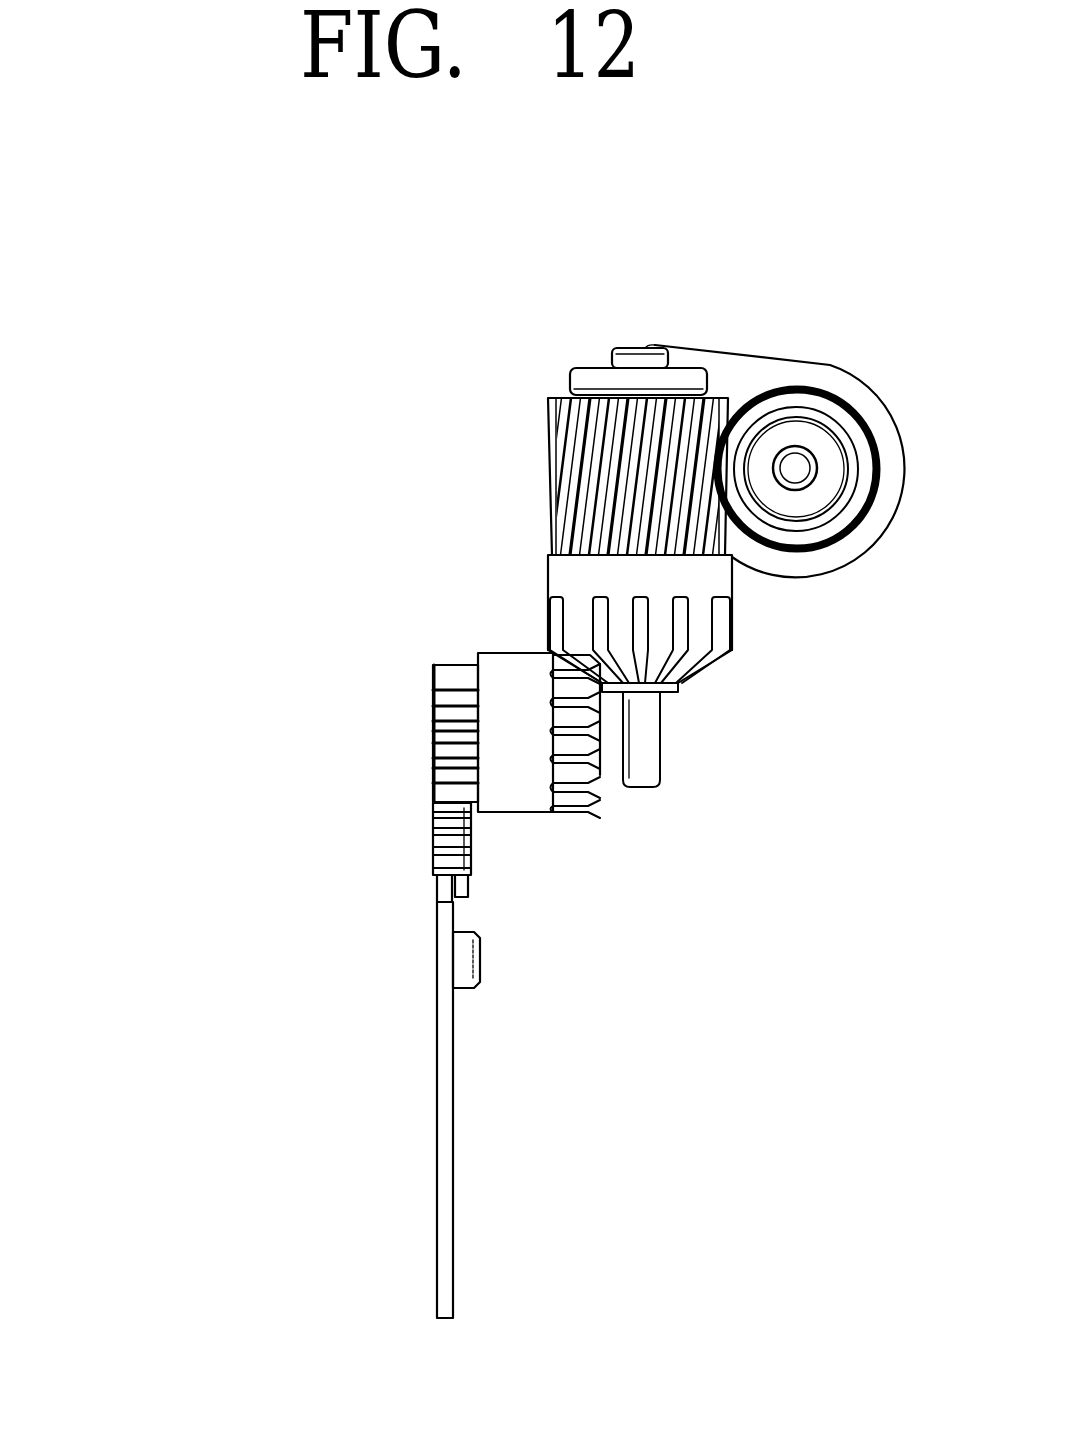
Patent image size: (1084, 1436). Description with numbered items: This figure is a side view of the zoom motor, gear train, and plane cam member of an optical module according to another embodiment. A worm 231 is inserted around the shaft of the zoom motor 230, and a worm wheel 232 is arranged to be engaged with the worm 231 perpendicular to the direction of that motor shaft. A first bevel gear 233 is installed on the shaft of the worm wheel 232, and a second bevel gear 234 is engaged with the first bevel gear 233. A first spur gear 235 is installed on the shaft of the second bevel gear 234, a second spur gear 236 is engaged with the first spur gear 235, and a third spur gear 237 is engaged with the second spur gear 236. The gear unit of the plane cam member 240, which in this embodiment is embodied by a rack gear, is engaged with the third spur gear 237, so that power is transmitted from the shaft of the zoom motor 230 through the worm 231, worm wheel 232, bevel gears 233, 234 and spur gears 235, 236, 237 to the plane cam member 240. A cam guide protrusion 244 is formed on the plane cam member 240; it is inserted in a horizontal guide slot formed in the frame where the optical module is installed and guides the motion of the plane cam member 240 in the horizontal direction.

The zoom motor 230 is at (863, 400).
The worm 231 is at (790, 432).
The worm wheel 232 is at (565, 468).
The first bevel gear 233 is at (583, 607).
The second bevel gear 234 is at (575, 810).
The first spur gear 235 is at (448, 680).
The second spur gear 236 is at (448, 838).
The third spur gear 237 is at (447, 886).
The plane cam member 240 is at (390, 1072).
The cam guide protrusion 244 is at (483, 960).